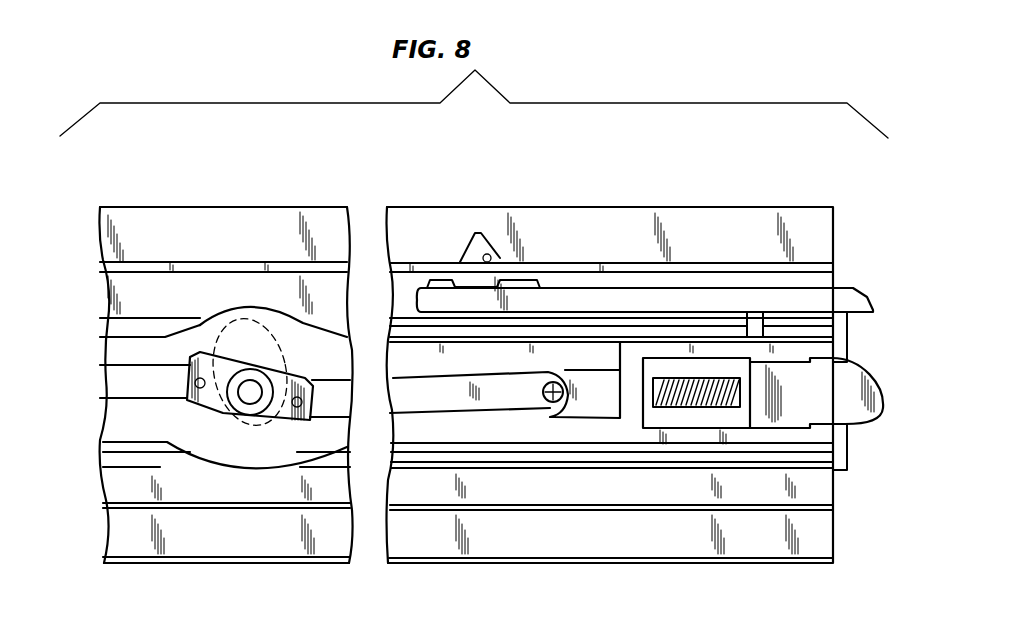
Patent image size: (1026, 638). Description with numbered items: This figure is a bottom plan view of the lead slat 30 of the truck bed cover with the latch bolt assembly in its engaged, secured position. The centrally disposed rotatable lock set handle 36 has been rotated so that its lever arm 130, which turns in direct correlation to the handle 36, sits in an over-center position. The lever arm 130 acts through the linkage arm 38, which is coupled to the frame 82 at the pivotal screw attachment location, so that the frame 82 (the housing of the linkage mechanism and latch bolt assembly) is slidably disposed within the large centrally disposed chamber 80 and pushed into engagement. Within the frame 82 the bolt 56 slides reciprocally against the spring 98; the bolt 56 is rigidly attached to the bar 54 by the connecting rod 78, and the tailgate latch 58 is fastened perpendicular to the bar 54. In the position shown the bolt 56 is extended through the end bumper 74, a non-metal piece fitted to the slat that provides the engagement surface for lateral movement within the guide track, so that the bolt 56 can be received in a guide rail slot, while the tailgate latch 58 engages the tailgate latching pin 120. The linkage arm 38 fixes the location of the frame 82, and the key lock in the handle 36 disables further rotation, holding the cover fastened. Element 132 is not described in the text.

The lead slat 30 is at (757, 230).
The lock set handle 36 is at (283, 352).
The linkage arm 38 is at (137, 388).
The bar 54 is at (847, 297).
The bolt 56 is at (858, 408).
The tailgate latch 58 is at (477, 240).
The end bumper 74 is at (847, 340).
The connecting rod 78 is at (753, 323).
The chamber 80 is at (533, 355).
The frame 82 is at (640, 437).
The spring 98 is at (710, 407).
The pin 120 is at (493, 260).
The lever arm 130 is at (203, 353).
The pin 132 is at (297, 402).